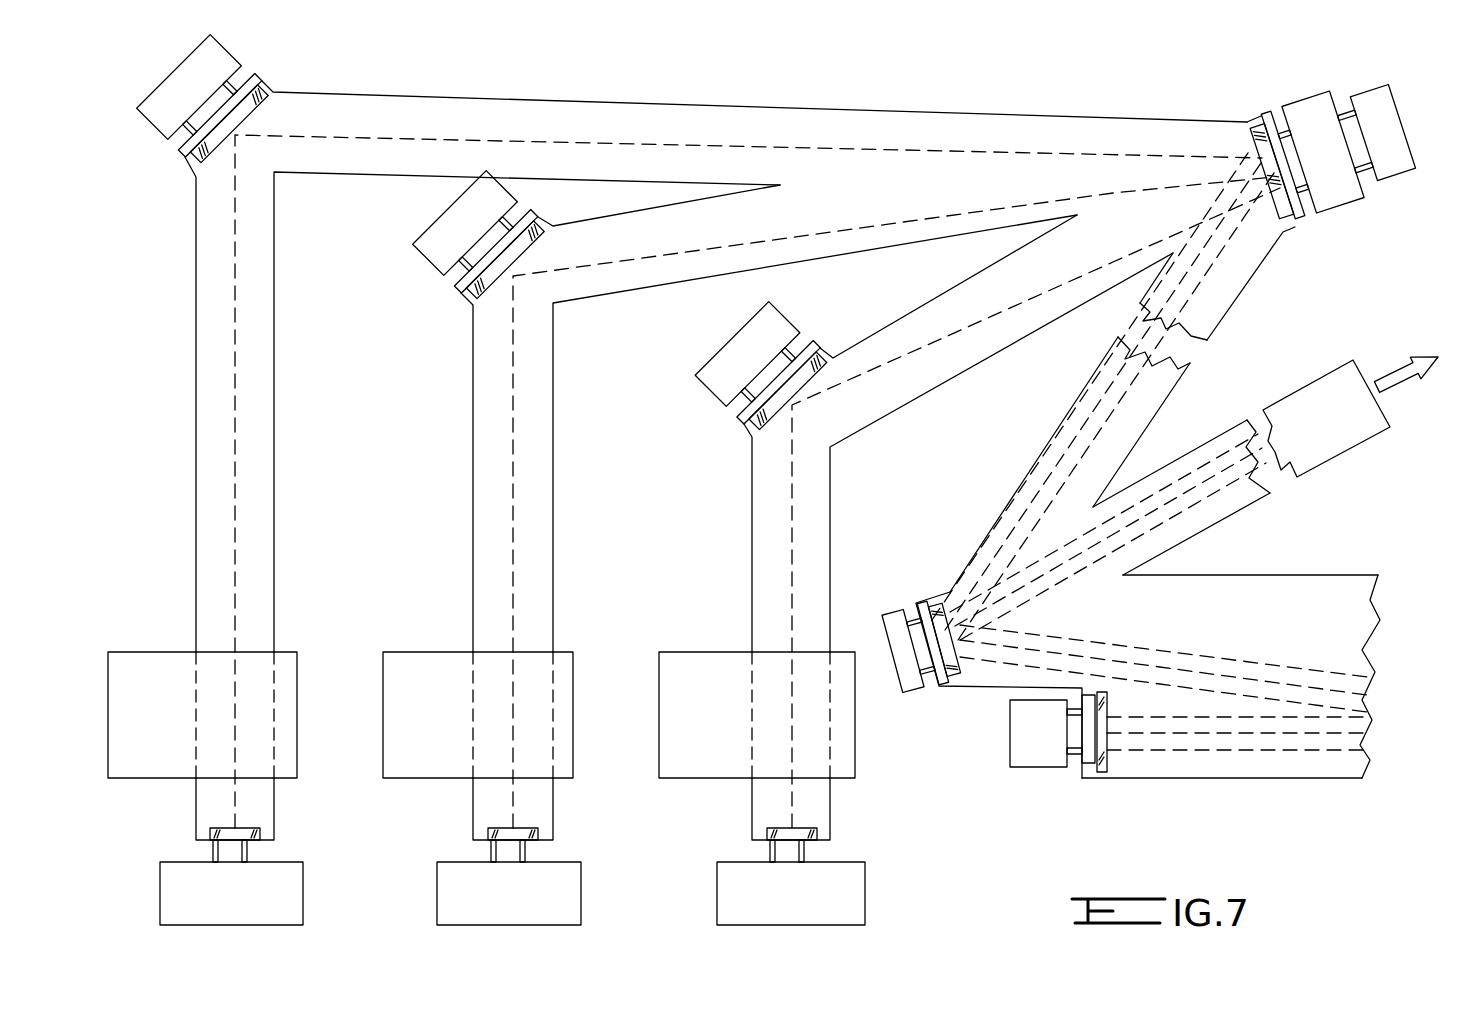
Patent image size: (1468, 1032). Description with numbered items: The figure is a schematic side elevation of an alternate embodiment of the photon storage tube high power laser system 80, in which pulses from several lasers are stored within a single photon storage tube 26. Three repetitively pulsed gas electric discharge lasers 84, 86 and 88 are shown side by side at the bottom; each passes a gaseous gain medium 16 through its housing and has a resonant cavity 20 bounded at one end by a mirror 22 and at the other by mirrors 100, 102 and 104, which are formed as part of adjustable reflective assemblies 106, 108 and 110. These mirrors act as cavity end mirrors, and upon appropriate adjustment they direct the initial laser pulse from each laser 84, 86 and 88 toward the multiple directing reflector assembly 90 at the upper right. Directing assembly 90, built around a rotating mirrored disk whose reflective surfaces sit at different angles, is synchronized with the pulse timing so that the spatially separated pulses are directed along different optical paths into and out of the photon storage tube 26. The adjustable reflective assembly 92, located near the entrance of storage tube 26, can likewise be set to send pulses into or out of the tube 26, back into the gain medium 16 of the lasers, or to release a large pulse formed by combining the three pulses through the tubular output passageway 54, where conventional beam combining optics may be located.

The gaseous gain medium 16 is at (499, 710).
The resonant cavity 20 is at (470, 468).
The mirror 22 is at (262, 829).
The photon storage tube 26 is at (1170, 703).
The tubular output passageway 54 is at (1295, 480).
The photon storage tube high power laser system 80 is at (846, 456).
The repetitively pulsed laser 84 is at (287, 780).
The repetitively pulsed laser 86 is at (383, 780).
The repetitively pulsed laser 88 is at (855, 780).
The multiple directing reflector assembly 90 is at (1317, 173).
The reflective assembly 92 is at (973, 633).
The mirror 100 is at (284, 77).
The mirror 102 is at (459, 299).
The mirror 104 is at (826, 344).
The adjustable reflective assembly 106 is at (262, 118).
The adjustable reflective assembly 108 is at (464, 264).
The adjustable reflective assembly 110 is at (769, 379).